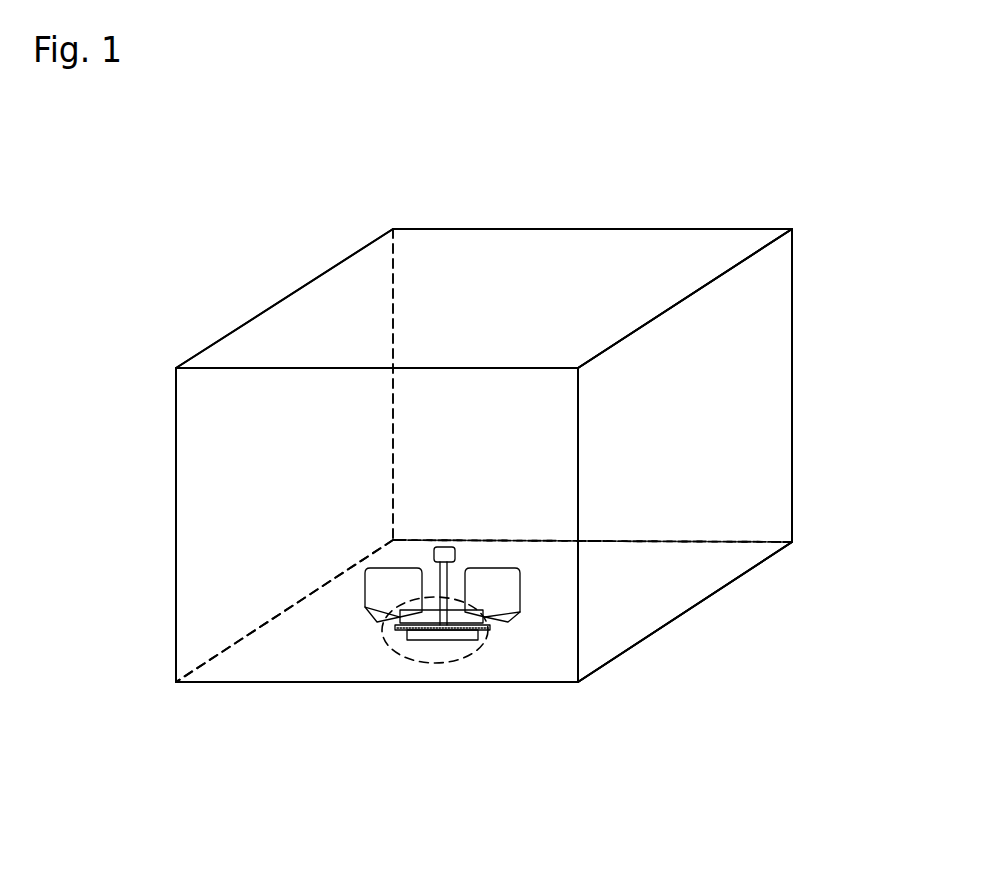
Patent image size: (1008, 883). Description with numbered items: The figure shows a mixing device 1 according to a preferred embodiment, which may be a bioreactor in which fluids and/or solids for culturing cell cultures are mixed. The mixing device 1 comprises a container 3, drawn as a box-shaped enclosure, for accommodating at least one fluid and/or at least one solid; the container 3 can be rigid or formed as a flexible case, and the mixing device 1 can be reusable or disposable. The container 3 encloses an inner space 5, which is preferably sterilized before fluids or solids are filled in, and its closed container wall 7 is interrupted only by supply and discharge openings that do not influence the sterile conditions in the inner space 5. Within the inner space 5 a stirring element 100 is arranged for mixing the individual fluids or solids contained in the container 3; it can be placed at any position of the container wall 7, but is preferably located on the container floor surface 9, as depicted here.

The mixing device 1 is at (793, 368).
The container 3 is at (613, 229).
The inner space 5 is at (228, 480).
The container wall 7 is at (638, 613).
The container floor surface 9 is at (312, 642).
The stirring element 100 is at (490, 597).